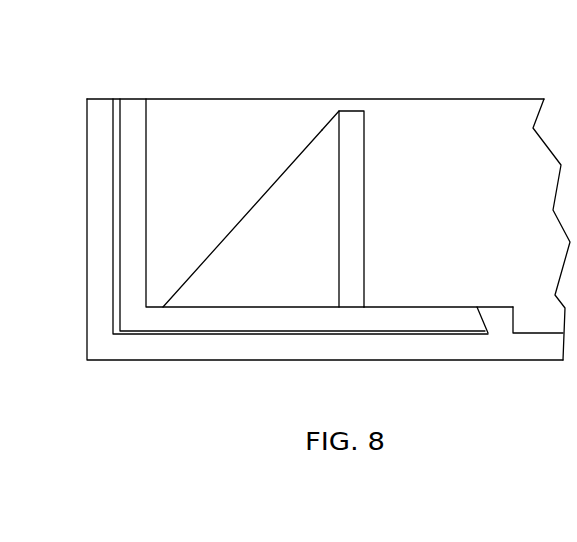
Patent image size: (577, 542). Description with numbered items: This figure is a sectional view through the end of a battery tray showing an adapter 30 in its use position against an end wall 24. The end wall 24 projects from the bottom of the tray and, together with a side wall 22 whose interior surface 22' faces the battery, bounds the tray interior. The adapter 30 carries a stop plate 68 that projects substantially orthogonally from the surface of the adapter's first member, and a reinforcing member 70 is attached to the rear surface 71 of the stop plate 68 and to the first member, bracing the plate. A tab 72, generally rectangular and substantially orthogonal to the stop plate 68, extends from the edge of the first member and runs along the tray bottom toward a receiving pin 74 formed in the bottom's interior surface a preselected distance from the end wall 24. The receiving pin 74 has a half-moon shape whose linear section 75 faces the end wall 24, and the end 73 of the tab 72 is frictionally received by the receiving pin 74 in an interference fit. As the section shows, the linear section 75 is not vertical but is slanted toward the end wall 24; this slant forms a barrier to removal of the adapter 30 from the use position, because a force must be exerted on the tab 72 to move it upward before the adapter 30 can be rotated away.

The adapter 30 is at (182, 52).
The end wall 24 is at (97, 157).
The side wall 22 is at (315, 85).
The interior surface of side wall 22' is at (525, 229).
The tab 72 is at (425, 325).
The reinforcing member 70 is at (290, 256).
The rear surface of stop plate 71 is at (338, 158).
The stop plate 68 is at (357, 207).
The linear section of receiving pin 75 is at (488, 306).
The receiving pin 74 is at (503, 318).
The end of tab 73 is at (479, 310).